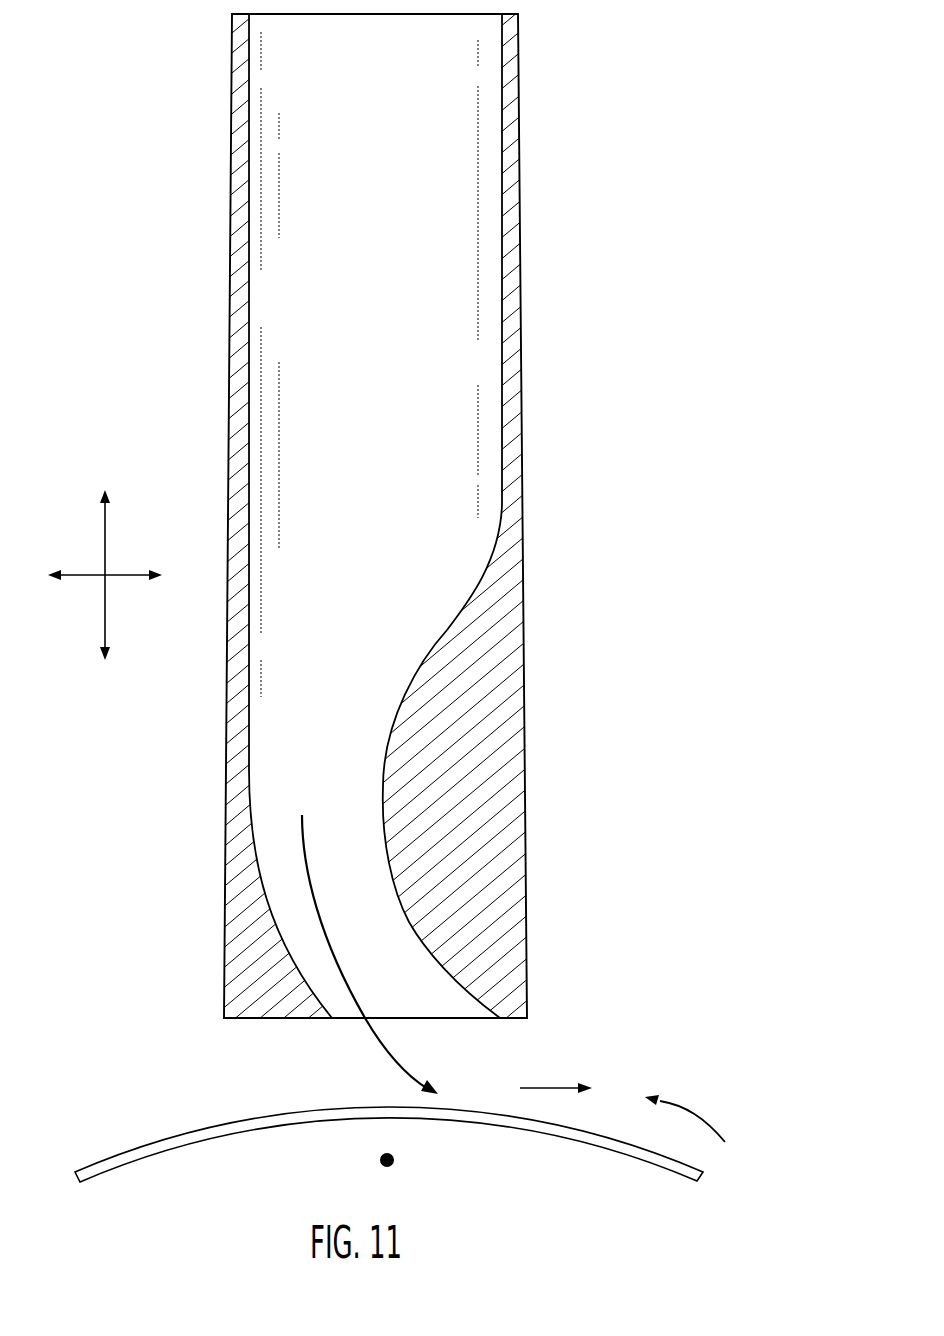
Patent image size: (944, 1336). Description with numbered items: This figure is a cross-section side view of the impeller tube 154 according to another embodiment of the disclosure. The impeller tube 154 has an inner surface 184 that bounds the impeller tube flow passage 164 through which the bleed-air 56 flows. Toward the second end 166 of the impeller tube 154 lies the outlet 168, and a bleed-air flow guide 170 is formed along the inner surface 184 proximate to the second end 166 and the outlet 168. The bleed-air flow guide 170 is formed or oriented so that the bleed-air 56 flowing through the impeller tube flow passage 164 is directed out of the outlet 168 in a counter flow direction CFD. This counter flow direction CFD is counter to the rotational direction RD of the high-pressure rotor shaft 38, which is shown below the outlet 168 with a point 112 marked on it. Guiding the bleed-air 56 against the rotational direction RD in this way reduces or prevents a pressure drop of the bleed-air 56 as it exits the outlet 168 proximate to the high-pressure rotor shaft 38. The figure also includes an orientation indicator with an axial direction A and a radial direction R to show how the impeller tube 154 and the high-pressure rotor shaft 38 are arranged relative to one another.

The impeller tube 154 is at (540, 95).
The inner surface 184 is at (249, 310).
The impeller tube flow passage 164 is at (388, 450).
The bleed-air flow guide 170 is at (444, 612).
The bleed-air 56 is at (315, 902).
The second end 166 is at (238, 1020).
The outlet 168 is at (410, 1027).
The counter flow direction CFD is at (559, 1085).
The rotational direction RD is at (694, 1115).
The high-pressure rotor shaft 38 is at (587, 1137).
The axis point 112 is at (394, 1160).
The axial direction A is at (118, 572).
The radial direction R is at (108, 613).